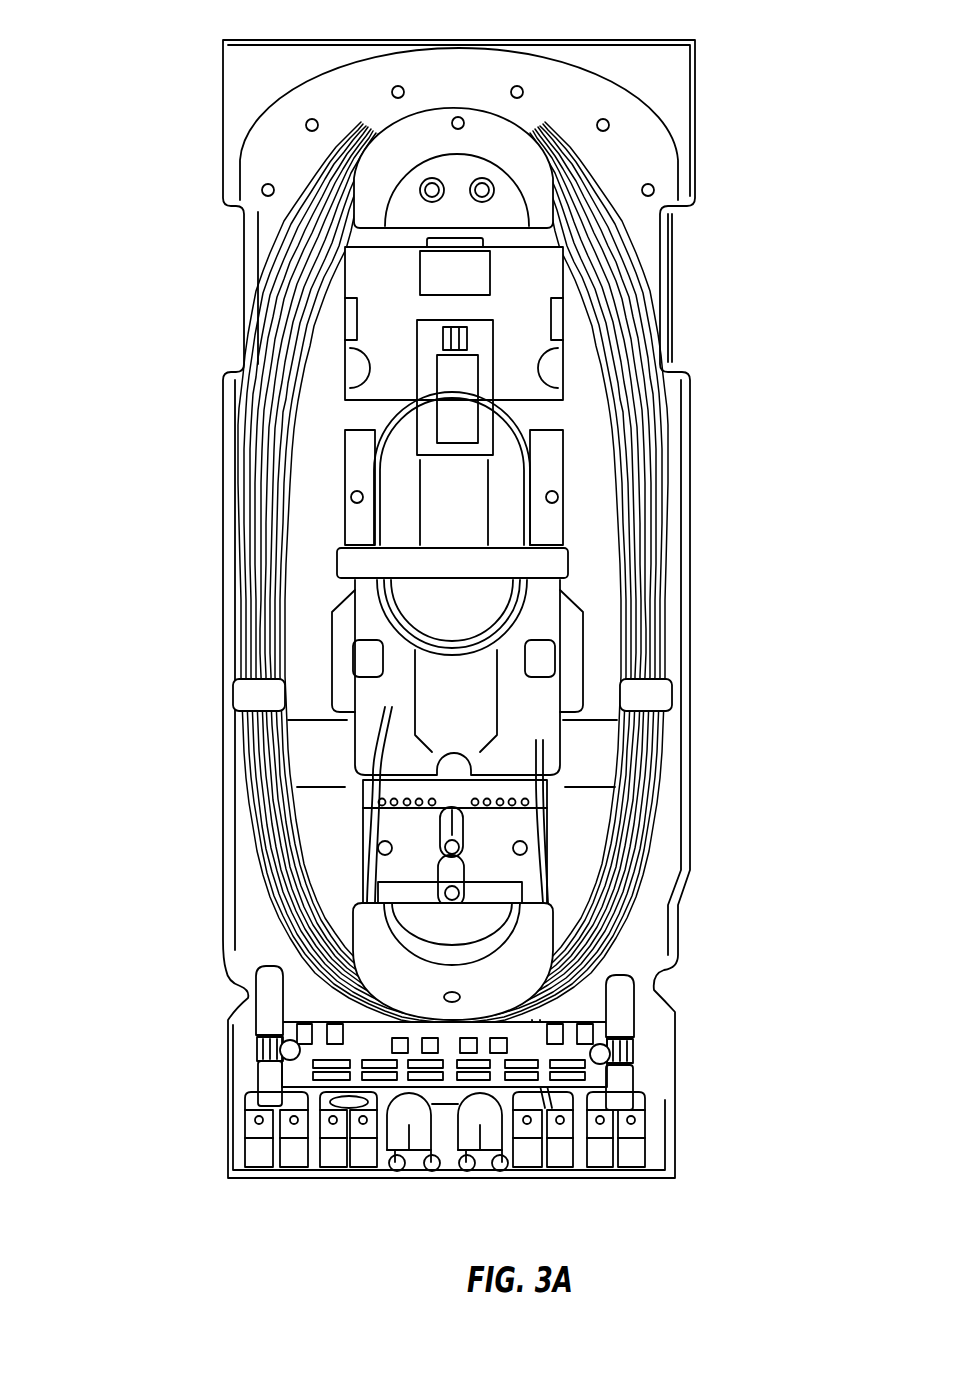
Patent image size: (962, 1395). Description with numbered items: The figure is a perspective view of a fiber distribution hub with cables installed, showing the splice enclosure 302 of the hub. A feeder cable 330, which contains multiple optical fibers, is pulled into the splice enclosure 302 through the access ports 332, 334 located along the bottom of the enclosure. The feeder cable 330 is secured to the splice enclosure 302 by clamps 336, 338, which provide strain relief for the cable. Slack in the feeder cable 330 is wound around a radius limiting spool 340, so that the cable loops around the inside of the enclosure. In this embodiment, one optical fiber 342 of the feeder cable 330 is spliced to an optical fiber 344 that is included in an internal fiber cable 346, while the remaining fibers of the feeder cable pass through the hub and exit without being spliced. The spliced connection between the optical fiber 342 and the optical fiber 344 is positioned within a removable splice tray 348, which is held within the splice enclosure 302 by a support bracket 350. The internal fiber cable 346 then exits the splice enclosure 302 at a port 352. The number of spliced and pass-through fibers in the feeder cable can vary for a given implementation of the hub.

The splice enclosure 302 is at (588, 105).
The removable splice tray 348 is at (398, 372).
The optical fiber 342 is at (410, 405).
The support bracket 350 is at (360, 563).
The optical fiber 344 is at (473, 605).
The internal fiber cable 346 is at (547, 773).
The port 352 is at (543, 823).
The radius limiting spool 340 is at (523, 955).
The feeder cable 330 is at (272, 1003).
The clamp 338 is at (262, 1049).
The clamp 336 is at (633, 1056).
The access port 332 is at (258, 1152).
The access port 334 is at (615, 1148).